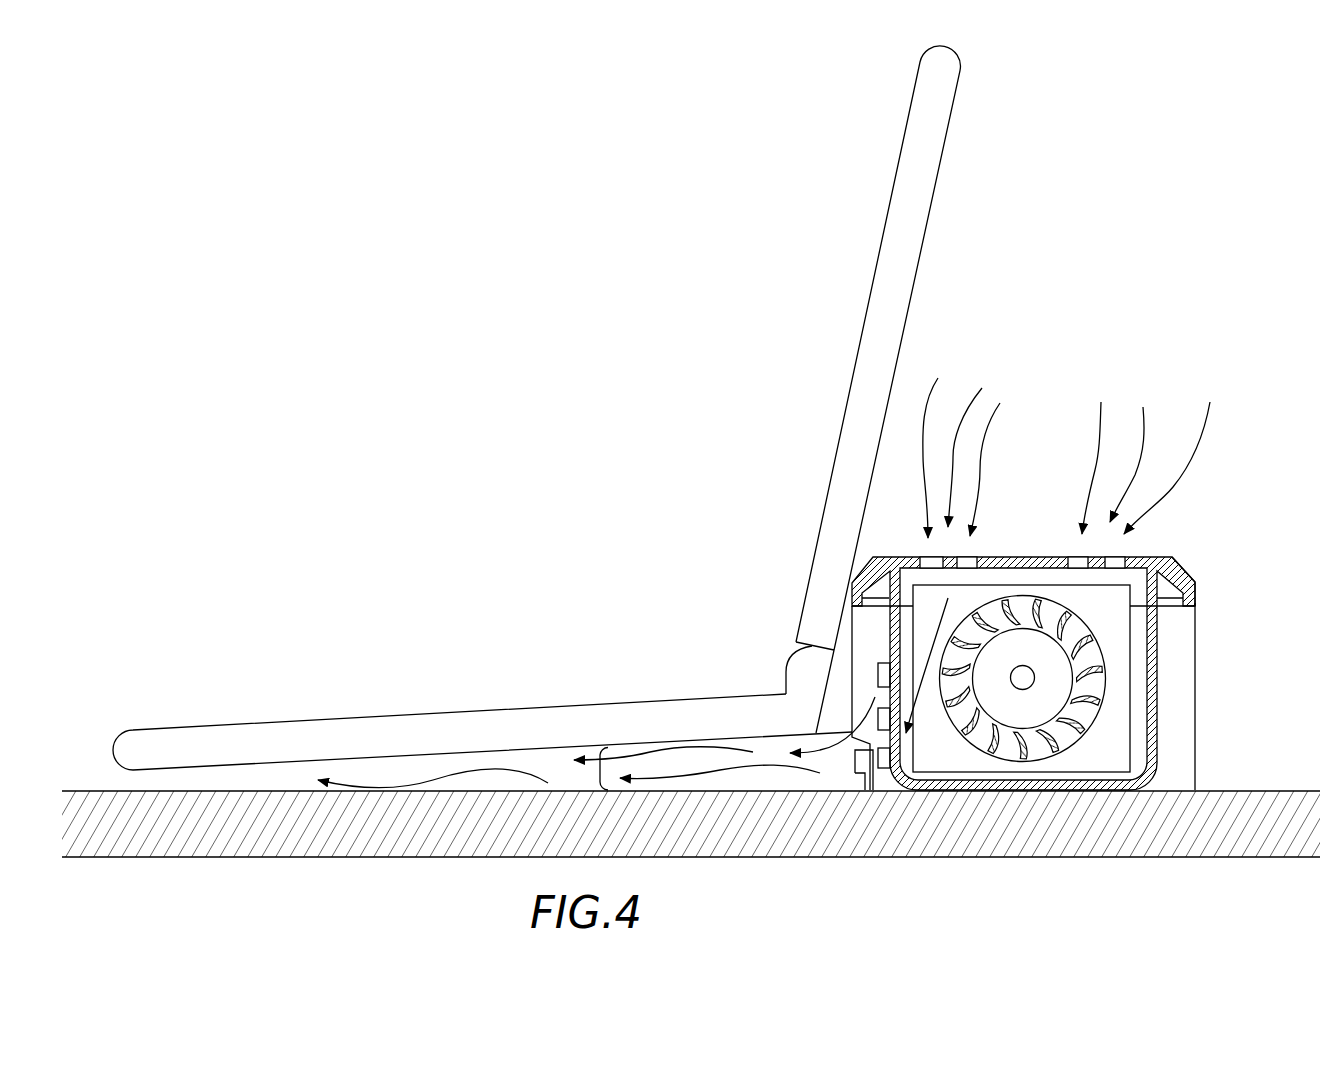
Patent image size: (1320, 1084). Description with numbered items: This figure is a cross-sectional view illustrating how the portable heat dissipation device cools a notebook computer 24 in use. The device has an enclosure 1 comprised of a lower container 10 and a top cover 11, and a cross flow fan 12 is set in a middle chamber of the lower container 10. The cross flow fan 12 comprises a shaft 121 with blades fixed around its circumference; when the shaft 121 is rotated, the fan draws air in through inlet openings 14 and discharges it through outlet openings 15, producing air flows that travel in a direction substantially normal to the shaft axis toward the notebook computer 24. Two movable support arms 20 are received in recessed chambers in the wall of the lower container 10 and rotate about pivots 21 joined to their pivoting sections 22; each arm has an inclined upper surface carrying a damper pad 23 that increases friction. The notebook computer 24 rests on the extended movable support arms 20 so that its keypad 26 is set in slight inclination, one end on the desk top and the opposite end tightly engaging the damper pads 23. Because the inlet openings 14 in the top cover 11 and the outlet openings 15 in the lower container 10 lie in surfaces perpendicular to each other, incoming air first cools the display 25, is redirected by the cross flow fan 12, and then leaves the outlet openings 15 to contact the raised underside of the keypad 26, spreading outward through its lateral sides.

The enclosure 1 is at (818, 642).
The lower container 10 is at (1192, 736).
The top cover 11 is at (1197, 571).
The cross flow fan 12 is at (1060, 750).
The shaft 121 is at (1022, 684).
The inlet openings 14 is at (1067, 556).
The outlet openings 15 is at (880, 768).
The movable support arms 20 is at (767, 777).
The pivots 21 is at (866, 775).
The pivoting sections 22 is at (853, 757).
The damper pad 23 is at (688, 735).
The notebook computer 24 is at (536, 481).
The display 25 is at (897, 252).
The keypad 26 is at (326, 745).